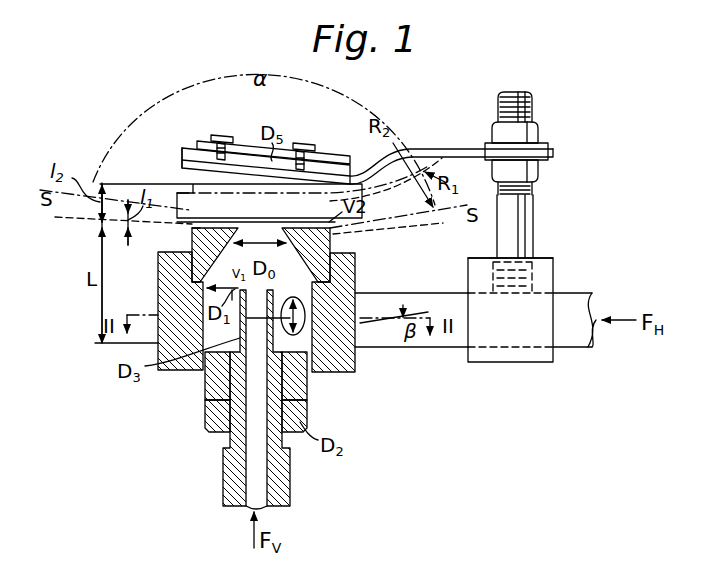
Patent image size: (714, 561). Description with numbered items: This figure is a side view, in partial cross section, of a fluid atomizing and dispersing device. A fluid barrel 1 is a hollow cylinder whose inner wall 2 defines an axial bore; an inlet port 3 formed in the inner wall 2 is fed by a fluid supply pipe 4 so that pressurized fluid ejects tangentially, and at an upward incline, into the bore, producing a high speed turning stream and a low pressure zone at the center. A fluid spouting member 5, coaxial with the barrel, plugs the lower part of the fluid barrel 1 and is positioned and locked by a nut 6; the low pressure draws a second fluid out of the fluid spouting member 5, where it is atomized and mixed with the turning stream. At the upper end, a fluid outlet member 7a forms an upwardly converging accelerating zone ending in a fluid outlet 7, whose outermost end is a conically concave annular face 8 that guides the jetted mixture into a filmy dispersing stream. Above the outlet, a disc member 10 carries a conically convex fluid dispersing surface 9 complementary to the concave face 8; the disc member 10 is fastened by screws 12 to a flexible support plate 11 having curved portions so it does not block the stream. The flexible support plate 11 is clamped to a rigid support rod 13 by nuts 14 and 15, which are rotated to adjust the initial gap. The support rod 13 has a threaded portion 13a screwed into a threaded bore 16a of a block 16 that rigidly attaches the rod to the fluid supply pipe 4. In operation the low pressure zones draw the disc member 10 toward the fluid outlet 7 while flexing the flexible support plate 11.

The fluid barrel 1 is at (354, 366).
The inner wall 2 is at (328, 365).
The inlet port 3 is at (310, 378).
The fluid supply pipe 4 is at (453, 350).
The fluid spouting member 5 is at (205, 385).
The nut 6 is at (205, 420).
The fluid outlet 7 is at (333, 243).
The fluid outlet member 7a is at (191, 233).
The conically concave annular face 8 is at (330, 226).
The fluid dispersing surface 9 is at (181, 160).
The disc member 10 is at (183, 148).
The flexible support plate 11 is at (398, 148).
The screws 12 is at (220, 135).
The rigid support rod 13 is at (533, 219).
The threaded portion 13a is at (492, 270).
The nut 14 is at (540, 131).
The nut 15 is at (540, 170).
The block 16 is at (552, 283).
The threaded bore 16a is at (553, 263).